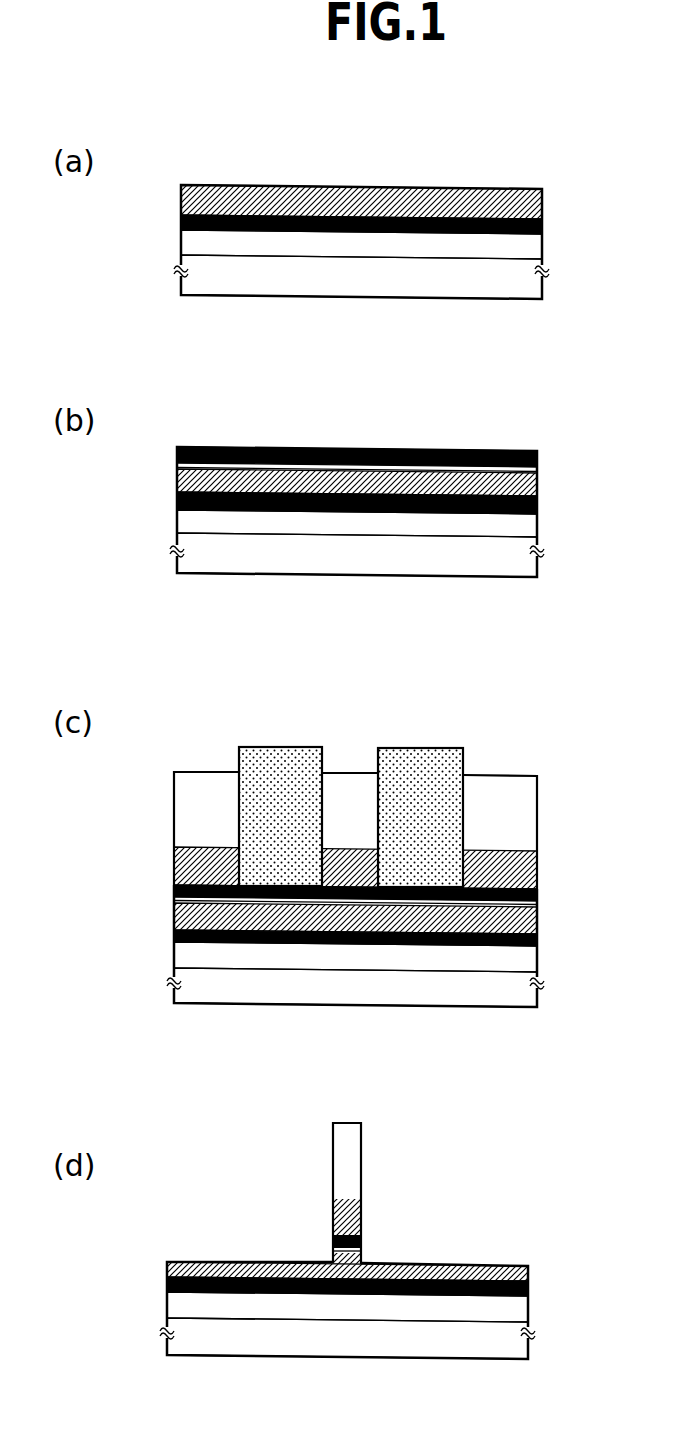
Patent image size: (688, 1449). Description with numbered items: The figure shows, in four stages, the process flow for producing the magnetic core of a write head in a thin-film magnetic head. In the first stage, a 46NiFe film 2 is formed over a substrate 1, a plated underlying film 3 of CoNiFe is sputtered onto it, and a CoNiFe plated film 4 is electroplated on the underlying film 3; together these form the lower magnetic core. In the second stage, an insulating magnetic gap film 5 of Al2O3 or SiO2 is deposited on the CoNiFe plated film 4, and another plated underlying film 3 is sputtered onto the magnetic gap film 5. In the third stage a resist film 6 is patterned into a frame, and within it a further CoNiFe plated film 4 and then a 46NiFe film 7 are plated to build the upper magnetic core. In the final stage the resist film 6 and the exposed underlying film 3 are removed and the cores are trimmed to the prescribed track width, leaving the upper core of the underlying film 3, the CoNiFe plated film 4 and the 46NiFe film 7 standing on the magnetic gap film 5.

The substrate 1 is at (545, 290).
The 46NiFe film 2 is at (530, 250).
The plated underlying film 3 is at (545, 226).
The CoNiFe plated film 4 is at (545, 203).
The magnetic gap film 5 is at (540, 468).
The resist film 6 is at (387, 757).
The 46NiFe film 7 is at (182, 802).